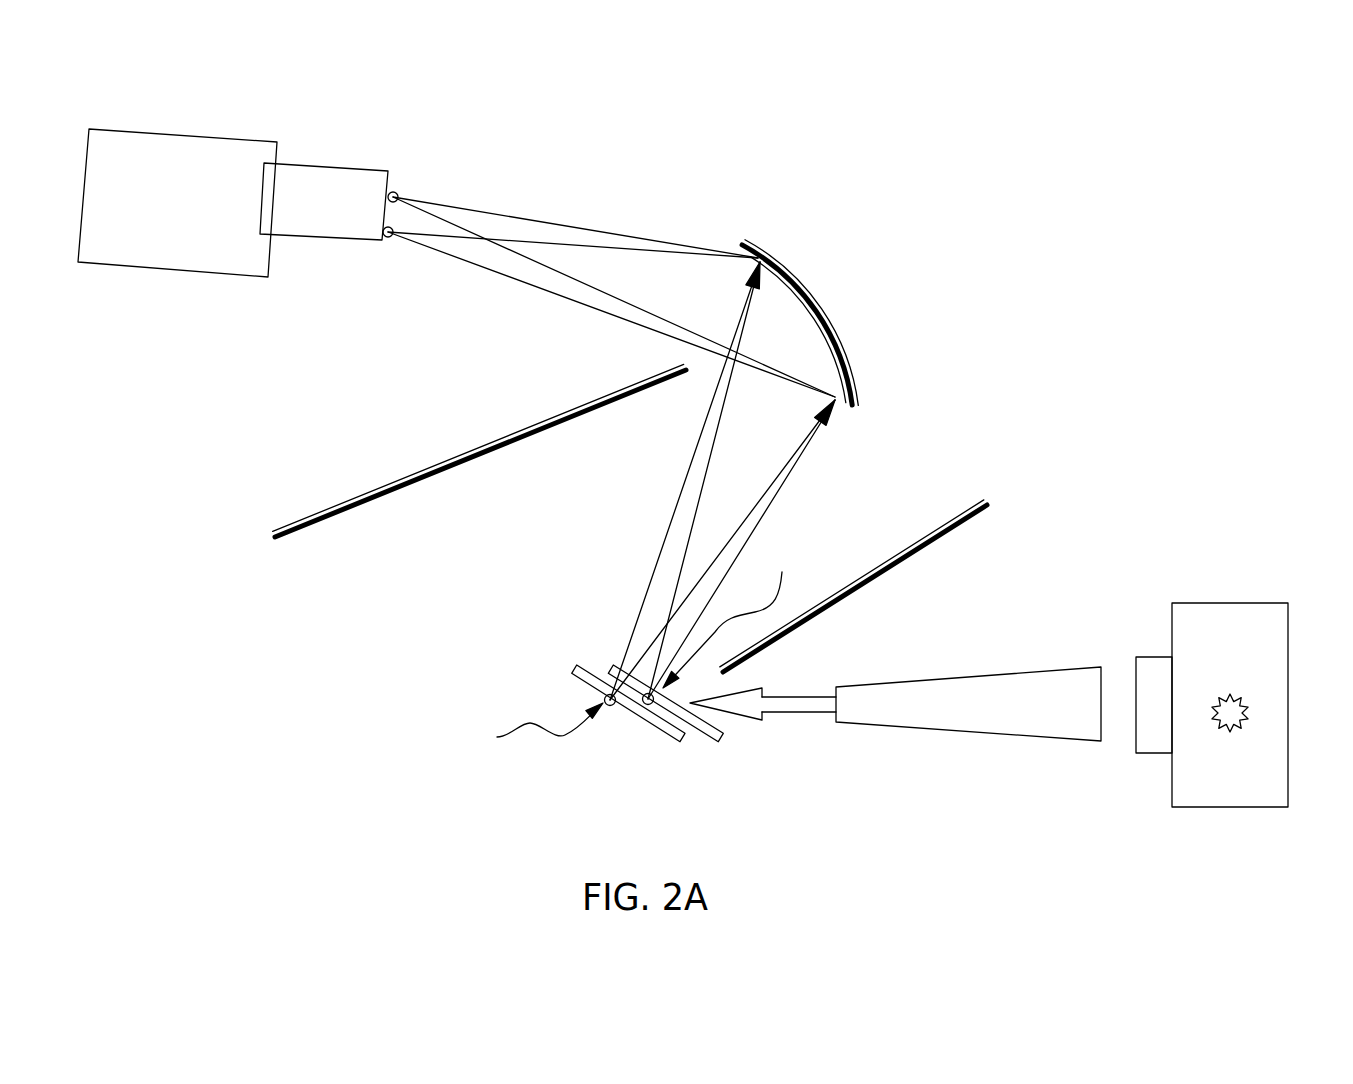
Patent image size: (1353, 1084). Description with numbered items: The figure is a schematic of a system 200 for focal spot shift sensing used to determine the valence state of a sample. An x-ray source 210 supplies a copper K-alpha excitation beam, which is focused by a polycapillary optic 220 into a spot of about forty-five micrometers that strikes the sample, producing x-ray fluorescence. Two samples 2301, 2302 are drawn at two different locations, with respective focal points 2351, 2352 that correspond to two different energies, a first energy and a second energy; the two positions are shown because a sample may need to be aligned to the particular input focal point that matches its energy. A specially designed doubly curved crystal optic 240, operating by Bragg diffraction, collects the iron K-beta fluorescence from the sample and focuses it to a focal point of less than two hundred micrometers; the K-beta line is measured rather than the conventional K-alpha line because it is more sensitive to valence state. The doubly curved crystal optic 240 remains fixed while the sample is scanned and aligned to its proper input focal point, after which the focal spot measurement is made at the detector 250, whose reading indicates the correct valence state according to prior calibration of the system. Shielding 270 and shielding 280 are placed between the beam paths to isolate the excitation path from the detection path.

The system 200 is at (883, 147).
The source 210 is at (1252, 603).
The polycapillary optic 220 is at (997, 733).
The sample 2301 is at (657, 727).
The sample 2302 is at (712, 738).
The focal point 2351 is at (522, 730).
The focal point 2352 is at (739, 613).
The doubly curved crystal optic 240 is at (823, 275).
The detector 250 is at (165, 134).
The shielding 270 is at (947, 516).
The shielding 280 is at (388, 481).